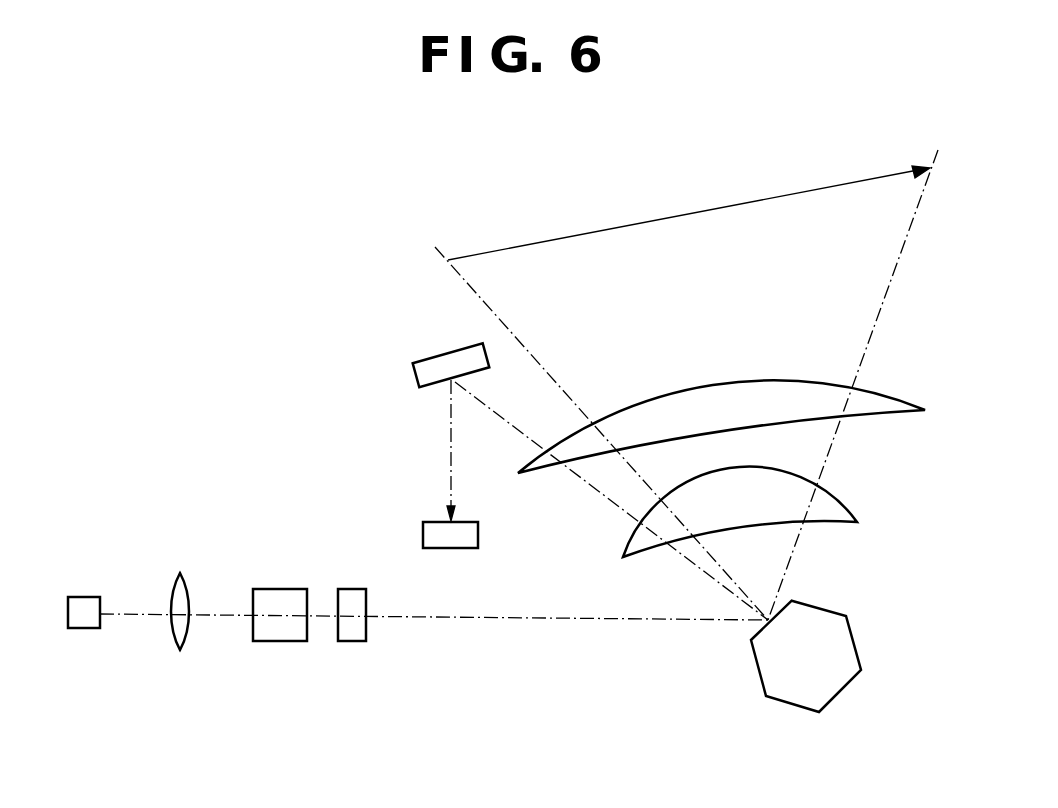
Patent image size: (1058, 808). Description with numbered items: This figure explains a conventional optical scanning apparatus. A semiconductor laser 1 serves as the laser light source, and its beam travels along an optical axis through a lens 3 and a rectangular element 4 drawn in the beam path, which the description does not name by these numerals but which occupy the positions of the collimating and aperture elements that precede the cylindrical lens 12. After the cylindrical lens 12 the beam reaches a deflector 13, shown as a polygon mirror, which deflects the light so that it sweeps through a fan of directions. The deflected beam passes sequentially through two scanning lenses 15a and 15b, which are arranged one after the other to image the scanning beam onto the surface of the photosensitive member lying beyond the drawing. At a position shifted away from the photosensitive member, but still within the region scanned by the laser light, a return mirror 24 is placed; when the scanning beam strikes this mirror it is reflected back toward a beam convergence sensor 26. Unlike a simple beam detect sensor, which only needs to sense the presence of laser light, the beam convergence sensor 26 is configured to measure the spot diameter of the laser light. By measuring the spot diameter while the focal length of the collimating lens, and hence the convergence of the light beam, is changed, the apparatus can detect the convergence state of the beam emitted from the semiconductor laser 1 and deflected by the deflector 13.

The semiconductor laser 1 is at (82, 597).
The collimator lens 3 is at (168, 592).
The aperture stop 4 is at (280, 589).
The cylindrical lens 12 is at (352, 589).
The deflector 13 is at (840, 693).
The scanning lens 15a is at (845, 497).
The scanning lens 15b is at (913, 397).
The return mirror 24 is at (417, 362).
The beam convergence sensor 26 is at (480, 535).